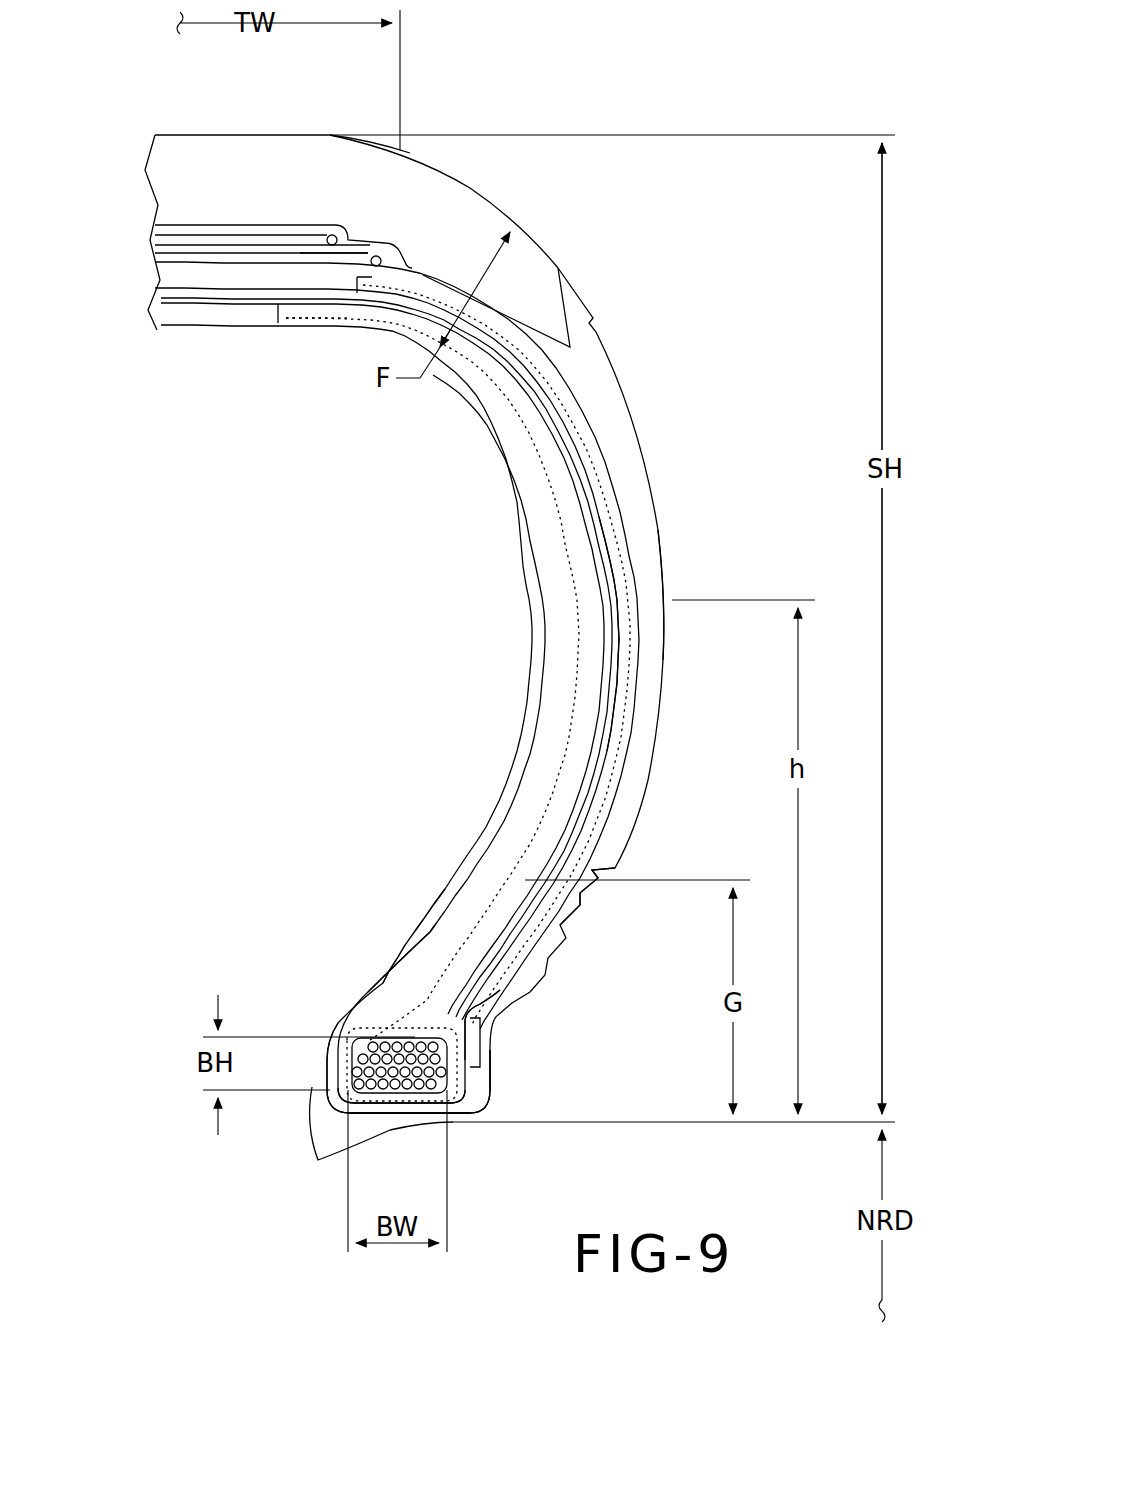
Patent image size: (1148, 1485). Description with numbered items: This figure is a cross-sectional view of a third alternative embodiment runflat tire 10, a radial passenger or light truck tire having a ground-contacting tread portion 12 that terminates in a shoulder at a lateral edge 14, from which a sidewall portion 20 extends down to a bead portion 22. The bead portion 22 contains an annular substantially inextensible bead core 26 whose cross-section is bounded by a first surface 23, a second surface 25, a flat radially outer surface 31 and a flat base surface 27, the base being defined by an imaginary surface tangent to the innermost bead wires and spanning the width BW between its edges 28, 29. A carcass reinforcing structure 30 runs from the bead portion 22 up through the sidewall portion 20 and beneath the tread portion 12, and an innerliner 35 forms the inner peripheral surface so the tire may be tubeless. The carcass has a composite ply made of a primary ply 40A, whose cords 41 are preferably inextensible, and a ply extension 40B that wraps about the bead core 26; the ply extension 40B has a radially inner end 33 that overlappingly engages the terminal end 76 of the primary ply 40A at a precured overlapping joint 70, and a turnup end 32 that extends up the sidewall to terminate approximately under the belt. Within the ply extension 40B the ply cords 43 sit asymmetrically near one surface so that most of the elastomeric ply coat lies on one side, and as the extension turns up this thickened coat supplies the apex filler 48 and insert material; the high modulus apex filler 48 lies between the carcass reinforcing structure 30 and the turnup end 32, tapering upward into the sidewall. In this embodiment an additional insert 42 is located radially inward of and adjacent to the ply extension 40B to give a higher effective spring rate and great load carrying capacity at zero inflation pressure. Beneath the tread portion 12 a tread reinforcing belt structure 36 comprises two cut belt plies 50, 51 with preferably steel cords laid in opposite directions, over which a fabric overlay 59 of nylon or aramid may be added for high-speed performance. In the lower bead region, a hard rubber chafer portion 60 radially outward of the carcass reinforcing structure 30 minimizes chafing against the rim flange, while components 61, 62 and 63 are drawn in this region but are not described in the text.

The tire 10 is at (620, 262).
The tread portion 12 is at (177, 135).
The lateral edge 14 is at (410, 153).
The sidewall portion 20 is at (658, 516).
The bead portion 22 is at (423, 983).
The first surface 23 is at (352, 1062).
The second surface 25 is at (452, 1068).
The bead core 26 is at (397, 1063).
The flat base surface 27 is at (410, 1093).
The edge 28 is at (365, 1107).
The edge 29 is at (447, 1082).
The carcass reinforcing structure 30 is at (180, 322).
The radially outer surface 31 is at (440, 1035).
The turnup end 32 is at (365, 296).
The radially inner end 33 is at (290, 318).
The innerliner 35 is at (430, 920).
The tread reinforcing belt structure 36 is at (196, 226).
The primary ply 40A is at (603, 697).
The ply extension 40B is at (567, 753).
The cords 41 is at (585, 768).
The insert 42 is at (567, 662).
The ply cords 43 is at (548, 792).
The apex filler 48 is at (433, 1017).
The belt ply 50 is at (313, 240).
The belt ply 51 is at (245, 256).
The fabric overlay 59 is at (250, 232).
The hard rubber chafer portion 60 is at (555, 910).
The chafer layer 61 is at (357, 1000).
The apex 62 is at (415, 955).
The toe guard 63 is at (482, 1025).
The overlapping joint 70 is at (577, 718).
The terminal end 76 is at (390, 1000).